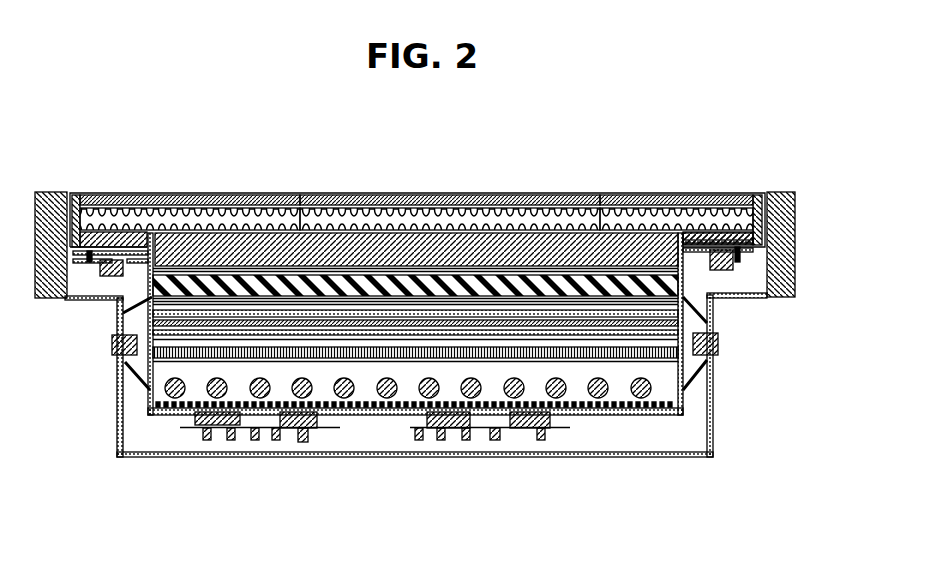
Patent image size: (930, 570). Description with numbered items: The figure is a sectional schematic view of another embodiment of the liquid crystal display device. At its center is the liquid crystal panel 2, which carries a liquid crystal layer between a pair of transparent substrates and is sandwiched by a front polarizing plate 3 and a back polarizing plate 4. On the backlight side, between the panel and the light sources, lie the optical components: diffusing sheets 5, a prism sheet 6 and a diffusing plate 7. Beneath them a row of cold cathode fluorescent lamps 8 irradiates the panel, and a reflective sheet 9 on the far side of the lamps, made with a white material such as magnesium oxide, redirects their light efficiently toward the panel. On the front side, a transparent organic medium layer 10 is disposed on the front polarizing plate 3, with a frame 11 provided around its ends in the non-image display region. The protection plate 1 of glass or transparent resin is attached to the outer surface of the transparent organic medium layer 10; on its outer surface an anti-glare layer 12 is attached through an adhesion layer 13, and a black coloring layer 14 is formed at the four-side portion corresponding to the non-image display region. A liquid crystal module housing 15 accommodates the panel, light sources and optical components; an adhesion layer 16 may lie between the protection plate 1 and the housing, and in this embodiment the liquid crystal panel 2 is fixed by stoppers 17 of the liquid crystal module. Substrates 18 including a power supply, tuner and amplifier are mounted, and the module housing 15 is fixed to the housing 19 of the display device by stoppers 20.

The protection plate 1 is at (510, 196).
The liquid crystal panel 2 is at (392, 273).
The front polarizing plate 3 is at (272, 265).
The back polarizing plate 4 is at (318, 298).
The diffusing sheets 5 is at (148, 294).
The prism sheet 6 is at (120, 325).
The diffusing plate 7 is at (142, 388).
The cold cathode fluorescent lamps 8 is at (168, 392).
The reflective sheet 9 is at (627, 402).
The transparent organic medium layer 10 is at (460, 196).
The frame 11 is at (655, 196).
The anti-glare layer 12 is at (243, 196).
The adhesion layer 13 is at (212, 196).
The black coloring layer 14 is at (698, 196).
The liquid crystal module housing 15 is at (683, 395).
The adhesion layer 16 is at (713, 196).
The stoppers 17 is at (753, 196).
The substrates 18 is at (417, 433).
The housing 19 is at (710, 432).
The stoppers 20 is at (720, 342).